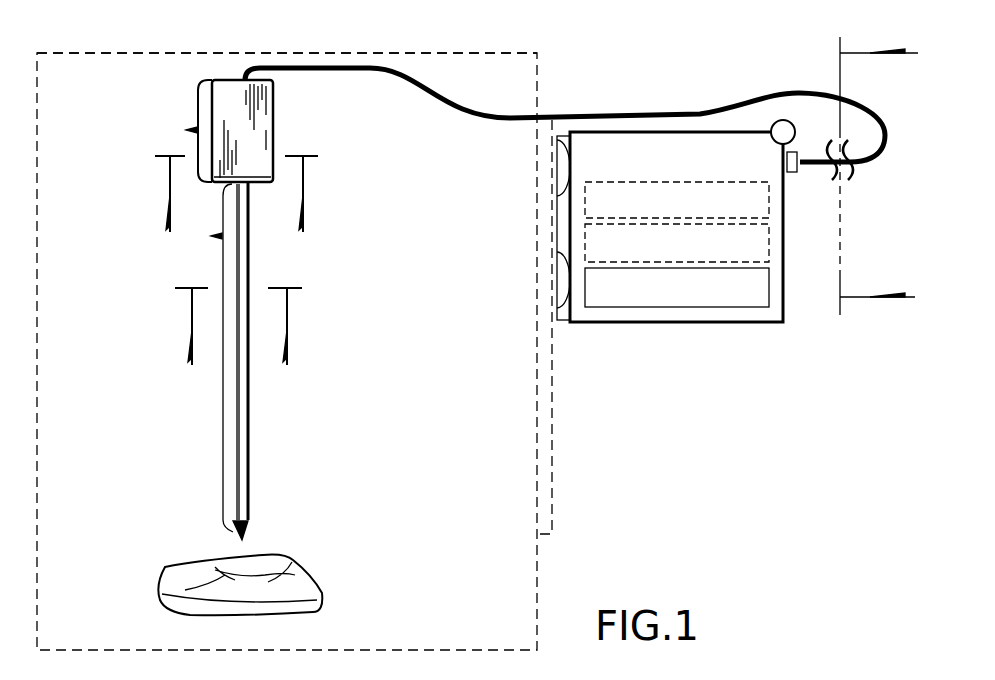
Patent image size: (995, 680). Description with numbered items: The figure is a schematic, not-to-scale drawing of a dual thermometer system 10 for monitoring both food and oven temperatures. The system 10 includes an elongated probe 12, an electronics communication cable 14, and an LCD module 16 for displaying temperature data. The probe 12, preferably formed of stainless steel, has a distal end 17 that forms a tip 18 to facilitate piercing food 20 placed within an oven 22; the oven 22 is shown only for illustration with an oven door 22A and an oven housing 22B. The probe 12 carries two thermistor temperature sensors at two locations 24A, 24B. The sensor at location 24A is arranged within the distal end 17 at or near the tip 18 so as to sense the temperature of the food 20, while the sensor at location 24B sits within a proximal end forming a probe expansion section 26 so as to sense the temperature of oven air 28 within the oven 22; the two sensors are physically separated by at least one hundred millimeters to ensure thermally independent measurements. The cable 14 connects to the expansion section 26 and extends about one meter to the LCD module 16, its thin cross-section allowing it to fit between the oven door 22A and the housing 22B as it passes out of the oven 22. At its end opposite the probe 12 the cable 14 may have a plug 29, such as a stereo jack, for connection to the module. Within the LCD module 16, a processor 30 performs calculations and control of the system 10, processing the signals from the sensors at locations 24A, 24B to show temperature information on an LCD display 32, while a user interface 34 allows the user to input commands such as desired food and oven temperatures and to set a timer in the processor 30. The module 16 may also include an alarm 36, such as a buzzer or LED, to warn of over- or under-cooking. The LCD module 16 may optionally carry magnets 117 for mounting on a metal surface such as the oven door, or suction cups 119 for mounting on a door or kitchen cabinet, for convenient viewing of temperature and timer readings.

The dual thermometer system 10 is at (640, 38).
The elongated probe 12 is at (178, 92).
The electronics communication cable 14 is at (452, 92).
The LCD module 16 is at (695, 132).
The distal end 17 is at (278, 436).
The tip 18 is at (258, 532).
The food 20 is at (296, 575).
The oven 22 is at (93, 53).
The oven door 22A is at (552, 495).
The oven housing 22B is at (537, 565).
The temperature sensor location 24A is at (265, 488).
The temperature sensor location 24B is at (258, 132).
The probe expansion section 26 is at (227, 84).
The oven air 28 is at (400, 458).
The plug 29 is at (798, 152).
The processor 30 is at (769, 198).
The LCD display 32 is at (769, 240).
The user interface 34 is at (769, 288).
The alarm 36 is at (783, 120).
The magnets 117 is at (562, 135).
The suction cups 119 is at (553, 170).